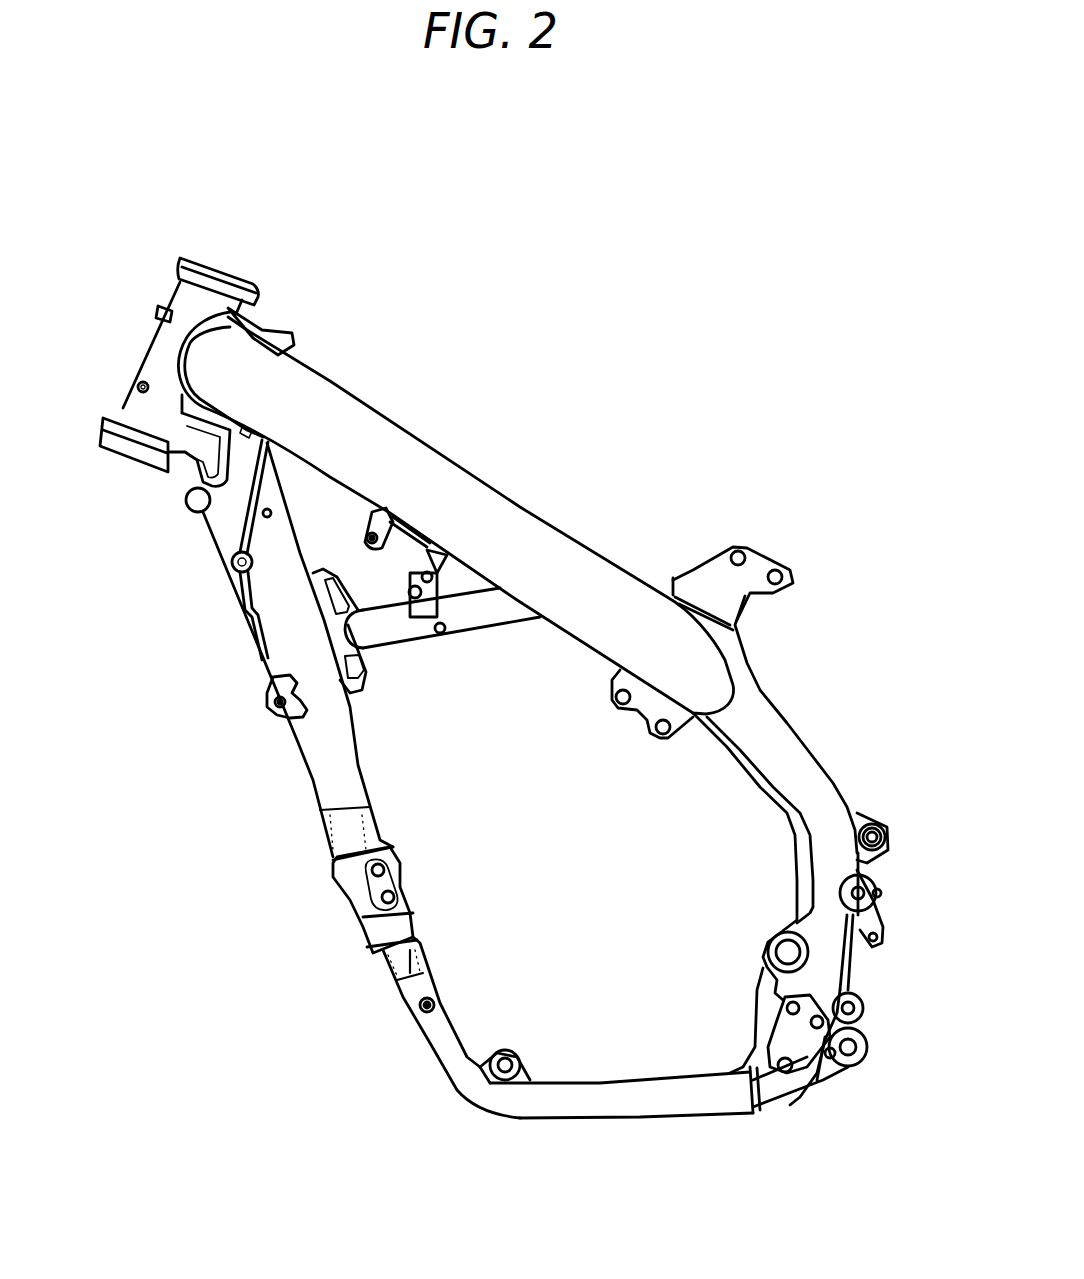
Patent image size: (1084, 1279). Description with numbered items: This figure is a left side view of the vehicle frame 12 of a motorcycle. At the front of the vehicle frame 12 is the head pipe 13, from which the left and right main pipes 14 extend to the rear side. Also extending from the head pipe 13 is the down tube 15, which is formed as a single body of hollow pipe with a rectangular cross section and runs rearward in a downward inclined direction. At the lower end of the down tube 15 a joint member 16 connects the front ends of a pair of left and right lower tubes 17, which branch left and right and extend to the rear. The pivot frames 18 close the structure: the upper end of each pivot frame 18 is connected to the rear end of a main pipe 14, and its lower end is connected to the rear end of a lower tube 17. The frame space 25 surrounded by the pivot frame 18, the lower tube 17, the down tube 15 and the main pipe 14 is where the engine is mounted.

The vehicle frame 12 is at (813, 683).
The head pipe 13 is at (150, 343).
The main pipe 14 is at (373, 405).
The down tube 15 is at (280, 632).
The joint member 16 is at (337, 880).
The lower tube 17 is at (605, 1105).
The pivot frame 18 is at (837, 863).
The frame space 25 is at (455, 800).